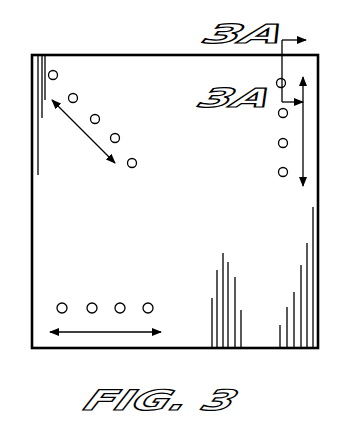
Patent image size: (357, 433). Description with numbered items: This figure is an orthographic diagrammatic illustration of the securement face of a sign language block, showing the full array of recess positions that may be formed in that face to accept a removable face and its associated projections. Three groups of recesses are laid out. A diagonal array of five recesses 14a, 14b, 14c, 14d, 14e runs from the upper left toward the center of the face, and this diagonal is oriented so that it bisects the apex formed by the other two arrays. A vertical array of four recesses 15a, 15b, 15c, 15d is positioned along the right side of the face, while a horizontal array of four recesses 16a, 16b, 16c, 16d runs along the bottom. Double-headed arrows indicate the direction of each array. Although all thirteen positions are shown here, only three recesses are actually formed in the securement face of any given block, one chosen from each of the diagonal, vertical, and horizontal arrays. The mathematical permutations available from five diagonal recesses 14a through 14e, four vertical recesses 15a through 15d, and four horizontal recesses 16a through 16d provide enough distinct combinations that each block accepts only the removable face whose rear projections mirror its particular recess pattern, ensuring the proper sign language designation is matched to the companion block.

The diagonal recess 14a is at (58, 74).
The diagonal recess 14b is at (78, 97).
The diagonal recess 14c is at (100, 118).
The diagonal recess 14d is at (120, 137).
The diagonal recess 14e is at (137, 162).
The vertical recess 15a is at (276, 83).
The vertical recess 15b is at (280, 117).
The vertical recess 15c is at (280, 147).
The vertical recess 15d is at (280, 176).
The horizontal recess 16a is at (63, 303).
The horizontal recess 16b is at (93, 303).
The horizontal recess 16c is at (122, 303).
The horizontal recess 16d is at (152, 304).